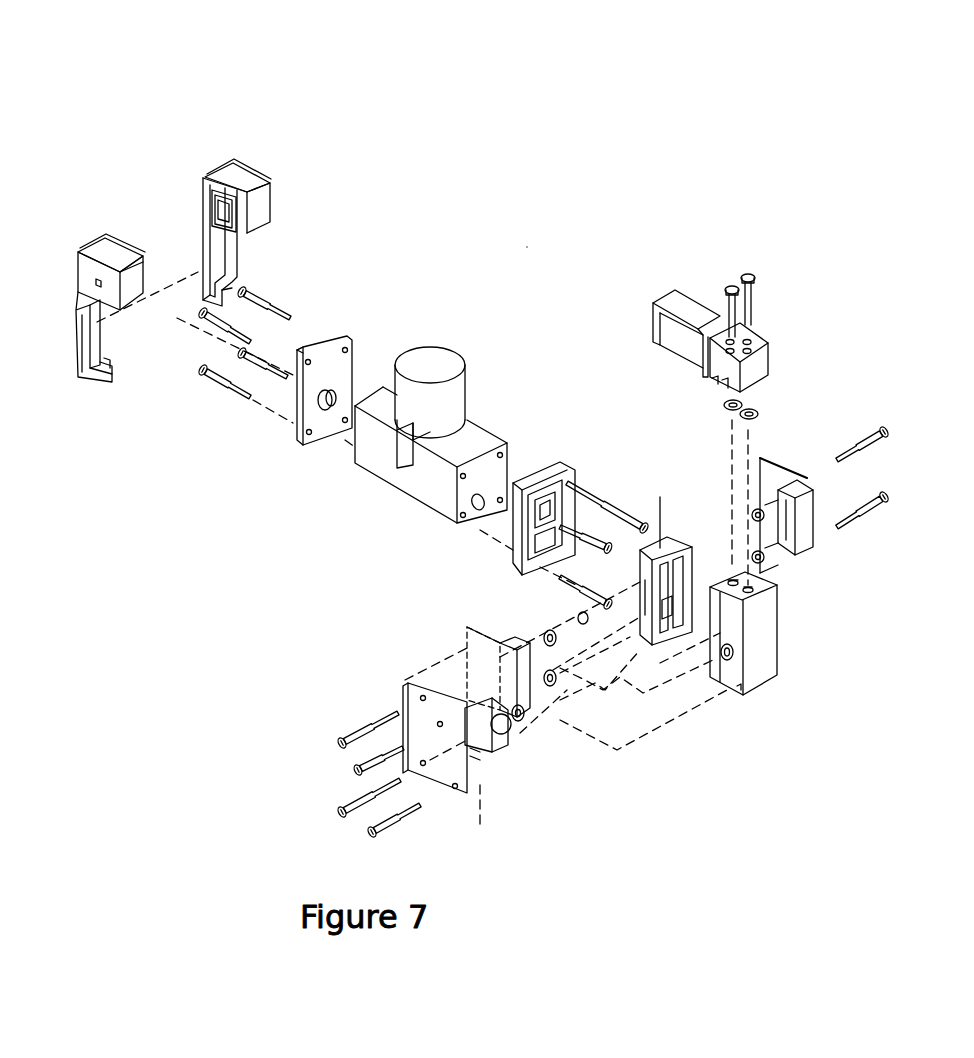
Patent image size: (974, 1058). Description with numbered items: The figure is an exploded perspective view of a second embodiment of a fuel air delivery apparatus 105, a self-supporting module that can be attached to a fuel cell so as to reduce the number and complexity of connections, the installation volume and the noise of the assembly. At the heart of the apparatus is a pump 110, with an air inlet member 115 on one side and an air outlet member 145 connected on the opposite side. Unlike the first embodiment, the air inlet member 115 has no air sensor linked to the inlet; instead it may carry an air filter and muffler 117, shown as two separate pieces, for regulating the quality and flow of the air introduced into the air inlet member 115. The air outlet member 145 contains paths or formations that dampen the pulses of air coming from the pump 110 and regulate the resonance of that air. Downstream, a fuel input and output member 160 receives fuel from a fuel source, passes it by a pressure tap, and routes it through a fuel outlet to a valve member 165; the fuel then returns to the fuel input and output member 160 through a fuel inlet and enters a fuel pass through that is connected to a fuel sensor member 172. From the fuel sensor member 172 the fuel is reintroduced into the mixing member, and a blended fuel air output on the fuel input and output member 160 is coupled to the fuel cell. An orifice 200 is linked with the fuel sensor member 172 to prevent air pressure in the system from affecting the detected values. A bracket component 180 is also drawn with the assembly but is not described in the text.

The fuel air delivery apparatus 105 is at (527, 245).
The pump 110 is at (434, 362).
The air inlet member 115 is at (329, 372).
The air filter and muffler 117 is at (110, 252).
The air outlet member 145 is at (548, 480).
The fuel input and output member 160 is at (760, 641).
The valve member 165 is at (680, 307).
The fuel sensor member 172 is at (515, 651).
The bracket 180 is at (796, 488).
The orifice 200 is at (583, 618).